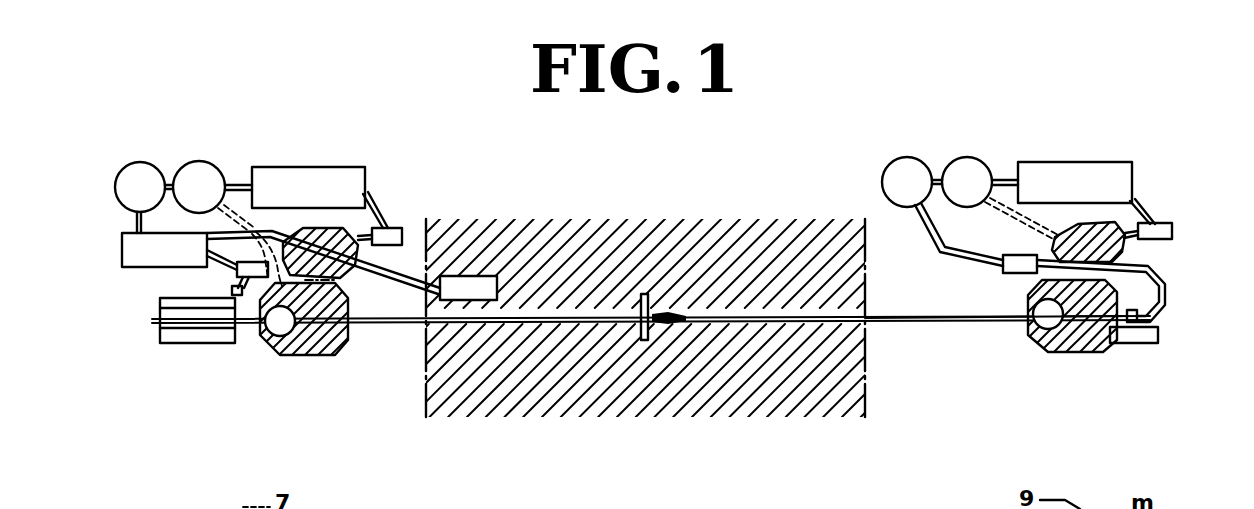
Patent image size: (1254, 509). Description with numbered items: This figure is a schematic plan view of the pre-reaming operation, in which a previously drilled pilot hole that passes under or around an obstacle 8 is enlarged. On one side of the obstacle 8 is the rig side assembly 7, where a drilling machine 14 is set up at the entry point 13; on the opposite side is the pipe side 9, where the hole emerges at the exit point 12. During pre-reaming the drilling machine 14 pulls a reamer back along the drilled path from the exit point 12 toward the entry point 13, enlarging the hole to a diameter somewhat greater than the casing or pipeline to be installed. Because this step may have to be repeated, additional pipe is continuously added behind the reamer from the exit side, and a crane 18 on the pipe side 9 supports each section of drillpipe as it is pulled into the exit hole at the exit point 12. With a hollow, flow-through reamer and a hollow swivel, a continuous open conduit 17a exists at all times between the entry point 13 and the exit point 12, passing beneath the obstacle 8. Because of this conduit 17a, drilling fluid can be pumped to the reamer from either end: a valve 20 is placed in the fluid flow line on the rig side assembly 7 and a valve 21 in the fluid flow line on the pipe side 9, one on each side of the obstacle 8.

The rig side assembly 7 is at (310, 148).
The obstacle 8 is at (582, 447).
The pipe side 9 is at (1148, 133).
The exit point 12 is at (1035, 326).
The entry point 13 is at (270, 340).
The drilling machine 14 is at (188, 343).
The continuous open conduit 17a is at (873, 316).
The crane 18 is at (1133, 343).
The valve 20 is at (233, 282).
The valve 21 is at (1037, 268).